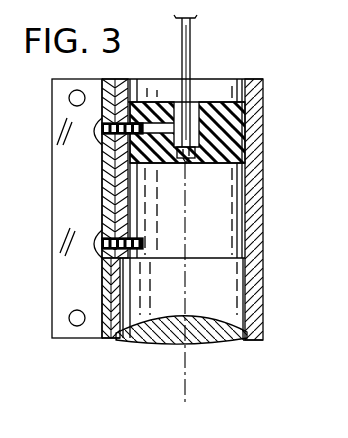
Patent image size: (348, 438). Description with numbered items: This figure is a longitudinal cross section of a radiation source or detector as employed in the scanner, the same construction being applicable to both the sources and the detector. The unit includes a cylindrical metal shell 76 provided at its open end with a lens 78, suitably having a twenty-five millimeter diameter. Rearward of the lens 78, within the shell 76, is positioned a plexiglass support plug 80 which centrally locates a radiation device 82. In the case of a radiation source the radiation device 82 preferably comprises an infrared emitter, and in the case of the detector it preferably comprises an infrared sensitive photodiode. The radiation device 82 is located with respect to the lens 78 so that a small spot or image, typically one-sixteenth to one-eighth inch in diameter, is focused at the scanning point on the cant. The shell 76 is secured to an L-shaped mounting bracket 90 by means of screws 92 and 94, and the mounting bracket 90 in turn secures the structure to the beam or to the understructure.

The cylindrical metal shell 76 is at (263, 203).
The lens 78 is at (213, 343).
The plexiglass support plug 80 is at (214, 100).
The radiation device 82 is at (197, 158).
The L-shaped mounting bracket 90 is at (52, 117).
The screw 92 is at (96, 140).
The screw 94 is at (96, 250).